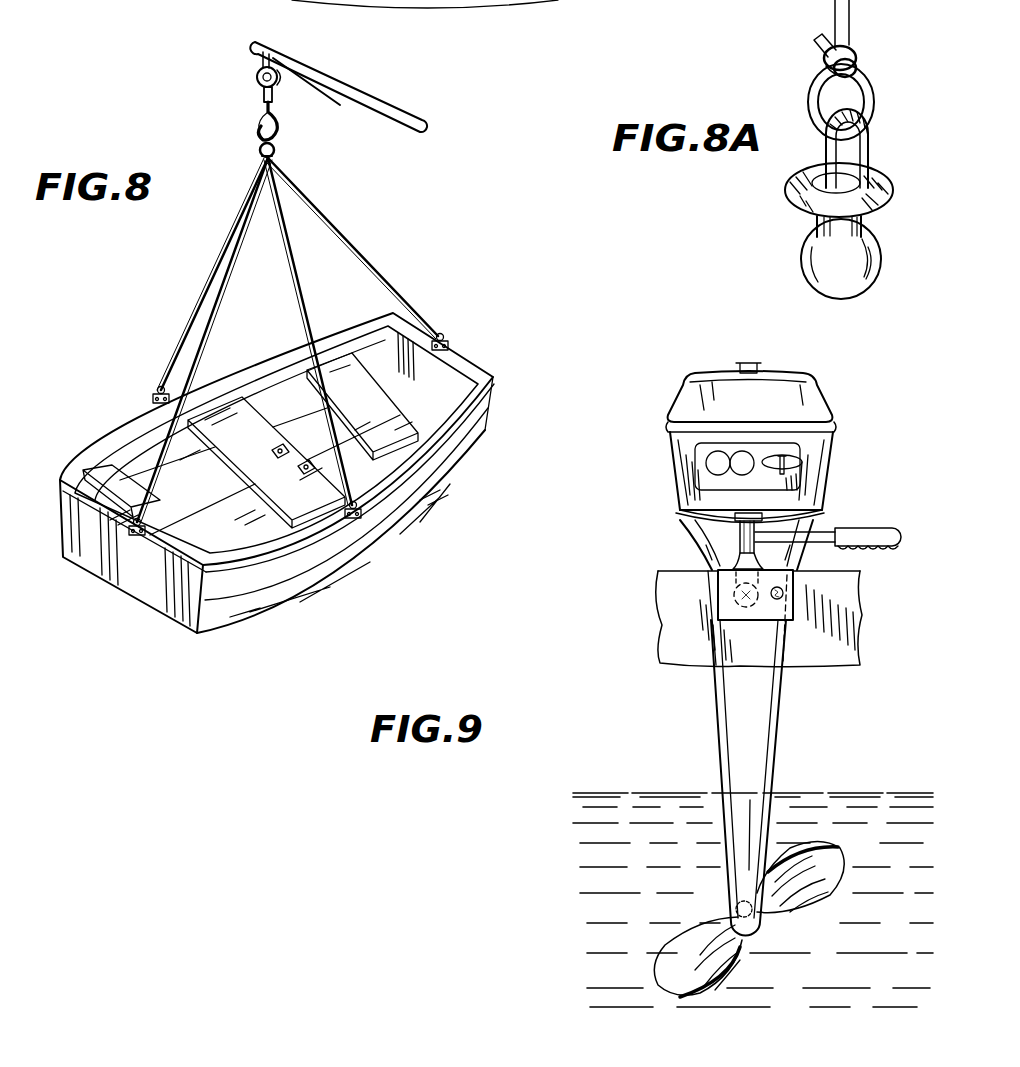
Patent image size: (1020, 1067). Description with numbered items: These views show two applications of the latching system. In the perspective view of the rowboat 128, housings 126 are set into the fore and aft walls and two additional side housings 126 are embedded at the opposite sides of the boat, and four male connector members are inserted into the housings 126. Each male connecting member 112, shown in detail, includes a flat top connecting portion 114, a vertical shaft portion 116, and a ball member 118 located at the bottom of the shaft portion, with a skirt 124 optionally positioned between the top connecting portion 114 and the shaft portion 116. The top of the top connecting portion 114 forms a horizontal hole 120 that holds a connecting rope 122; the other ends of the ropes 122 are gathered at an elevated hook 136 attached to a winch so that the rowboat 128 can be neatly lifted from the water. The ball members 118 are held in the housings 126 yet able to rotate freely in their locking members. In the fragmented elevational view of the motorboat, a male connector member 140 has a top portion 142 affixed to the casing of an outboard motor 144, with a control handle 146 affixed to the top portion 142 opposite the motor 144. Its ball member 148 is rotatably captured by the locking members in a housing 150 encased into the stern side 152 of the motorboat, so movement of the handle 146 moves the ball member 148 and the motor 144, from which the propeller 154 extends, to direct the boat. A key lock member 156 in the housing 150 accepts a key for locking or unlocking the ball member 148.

In FIG. 8A, the male connecting member 112 is at (800, 125).
In FIG. 8A, the top connecting portion 114 is at (864, 152).
In FIG. 8A, the vertical shaft portion 116 is at (864, 224).
In FIG. 8A, the ball member 118 is at (810, 268).
In FIG. 8A, the horizontal hole 120 is at (837, 147).
In FIG. 8, the connecting rope 122 is at (366, 263).
In FIG. 8A, the connecting rope 122 is at (850, 31).
In FIG. 8A, the skirt 124 is at (799, 199).
In FIG. 8, the housing 126 is at (152, 397).
In FIG. 8, the rowboat 128 is at (287, 593).
In FIG. 8, the elevated hook 136 is at (262, 122).
In FIG. 9, the male connector member 140 is at (727, 557).
In FIG. 9, the top portion 142 is at (724, 543).
In FIG. 9, the outboard motor 144 is at (835, 421).
In FIG. 9, the control handle 146 is at (826, 523).
In FIG. 9, the ball member 148 is at (736, 599).
In FIG. 9, the housing 150 is at (800, 620).
In FIG. 9, the stern side 152 is at (662, 650).
In FIG. 9, the propeller 154 is at (830, 860).
In FIG. 9, the key lock member 156 is at (784, 594).